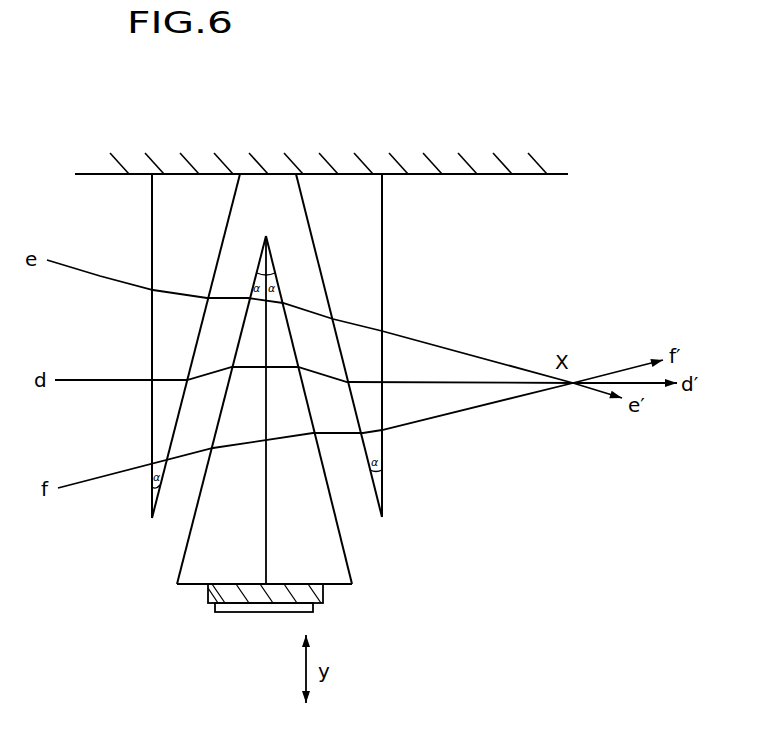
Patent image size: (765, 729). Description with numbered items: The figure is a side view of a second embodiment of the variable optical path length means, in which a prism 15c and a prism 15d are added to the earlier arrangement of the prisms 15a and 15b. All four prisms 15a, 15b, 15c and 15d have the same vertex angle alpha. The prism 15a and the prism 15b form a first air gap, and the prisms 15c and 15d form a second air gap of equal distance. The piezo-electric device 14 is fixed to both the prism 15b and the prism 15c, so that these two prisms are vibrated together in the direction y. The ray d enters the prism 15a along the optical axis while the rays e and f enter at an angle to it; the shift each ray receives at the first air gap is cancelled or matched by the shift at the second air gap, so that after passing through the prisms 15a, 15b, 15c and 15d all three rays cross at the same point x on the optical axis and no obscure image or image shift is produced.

The prism 15a is at (168, 205).
The prism 15b is at (197, 563).
The prism 15c is at (338, 572).
The prism 15d is at (374, 225).
The piezo-electric device 14 is at (215, 597).